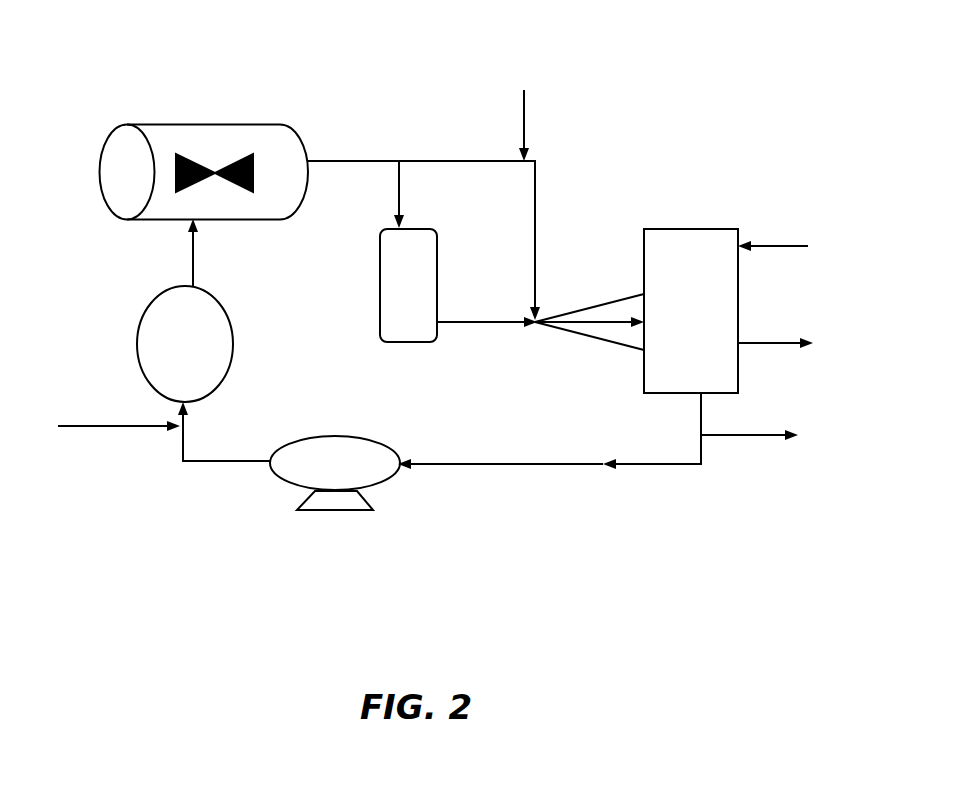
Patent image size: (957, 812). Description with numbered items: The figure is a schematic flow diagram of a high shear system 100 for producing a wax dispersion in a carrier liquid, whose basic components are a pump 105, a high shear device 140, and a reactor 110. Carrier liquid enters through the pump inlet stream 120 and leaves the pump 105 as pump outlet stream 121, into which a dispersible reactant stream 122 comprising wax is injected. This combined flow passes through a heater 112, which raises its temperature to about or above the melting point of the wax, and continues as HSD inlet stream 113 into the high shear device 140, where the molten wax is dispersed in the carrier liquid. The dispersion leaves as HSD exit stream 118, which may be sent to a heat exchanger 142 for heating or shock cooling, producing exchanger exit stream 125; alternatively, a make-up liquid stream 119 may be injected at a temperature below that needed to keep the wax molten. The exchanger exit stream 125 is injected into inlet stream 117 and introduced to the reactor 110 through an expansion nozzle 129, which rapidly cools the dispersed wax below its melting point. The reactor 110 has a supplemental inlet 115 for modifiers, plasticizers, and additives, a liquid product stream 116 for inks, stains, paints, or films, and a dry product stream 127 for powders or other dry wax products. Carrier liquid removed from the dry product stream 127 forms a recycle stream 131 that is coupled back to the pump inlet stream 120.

The high shear system 100 is at (241, 71).
The pump 105 is at (335, 473).
The reactor 110 is at (691, 311).
The heater 112 is at (185, 344).
The HSD inlet stream 113 is at (165, 252).
The supplemental inlet 115 is at (776, 236).
The liquid product stream 116 is at (775, 332).
The inlet stream 117 is at (592, 320).
The HSD exit stream 118 is at (424, 228).
The make-up liquid stream 119 is at (540, 125).
The pump inlet stream 120 is at (500, 448).
The pump outlet stream 121 is at (224, 431).
The dispersible reactant stream 122 is at (118, 415).
The exchanger exit stream 125 is at (487, 335).
The dry product stream 127 is at (753, 424).
The expansion nozzle 129 is at (573, 309).
The recycle stream 131 is at (652, 449).
The high shear device 140 is at (214, 164).
The heat exchanger 142 is at (408, 285).